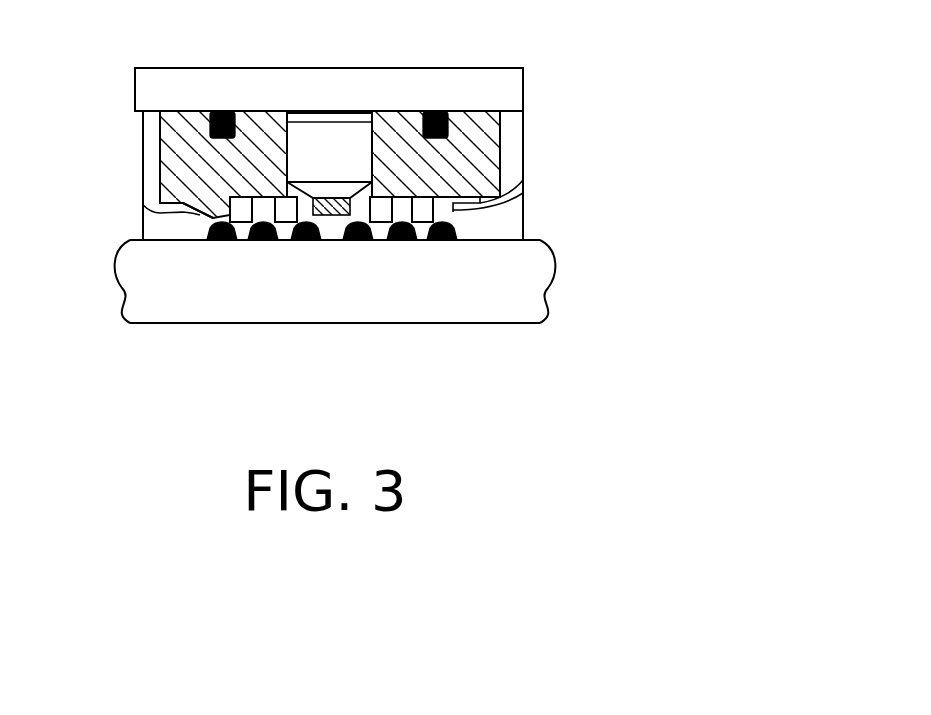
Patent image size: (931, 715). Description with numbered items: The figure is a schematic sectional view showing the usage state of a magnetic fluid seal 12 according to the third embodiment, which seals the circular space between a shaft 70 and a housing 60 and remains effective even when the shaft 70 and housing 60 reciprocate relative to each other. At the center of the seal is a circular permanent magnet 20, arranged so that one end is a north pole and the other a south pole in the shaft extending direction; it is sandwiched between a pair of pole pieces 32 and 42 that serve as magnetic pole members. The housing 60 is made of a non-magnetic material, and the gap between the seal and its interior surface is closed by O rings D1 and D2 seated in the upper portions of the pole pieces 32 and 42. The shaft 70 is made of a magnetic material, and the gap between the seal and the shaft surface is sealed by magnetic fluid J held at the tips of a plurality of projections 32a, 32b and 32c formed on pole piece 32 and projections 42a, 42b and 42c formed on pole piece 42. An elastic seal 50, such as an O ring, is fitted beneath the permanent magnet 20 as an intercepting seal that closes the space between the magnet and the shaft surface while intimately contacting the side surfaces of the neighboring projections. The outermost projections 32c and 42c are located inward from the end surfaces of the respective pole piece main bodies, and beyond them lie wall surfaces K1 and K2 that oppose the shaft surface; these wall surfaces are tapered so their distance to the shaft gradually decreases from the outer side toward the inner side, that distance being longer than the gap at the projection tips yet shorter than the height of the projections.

The magnetic fluid seal 12 is at (146, 137).
The permanent magnet 20 is at (333, 132).
The pole piece 32 is at (183, 125).
The projection 32a is at (288, 222).
The projection 32b is at (245, 222).
The projection 32c is at (213, 217).
The pole piece 42 is at (494, 137).
The projection 42a is at (382, 222).
The projection 42b is at (422, 222).
The projection 42c is at (523, 193).
The elastic seal 50 is at (330, 215).
The housing 60 is at (500, 68).
The shaft 70 is at (543, 298).
The O ring D1 is at (227, 110).
The O ring D2 is at (440, 110).
The wall surface K1 is at (143, 205).
The wall surface K2 is at (523, 180).
The magnetic fluid J is at (210, 231).